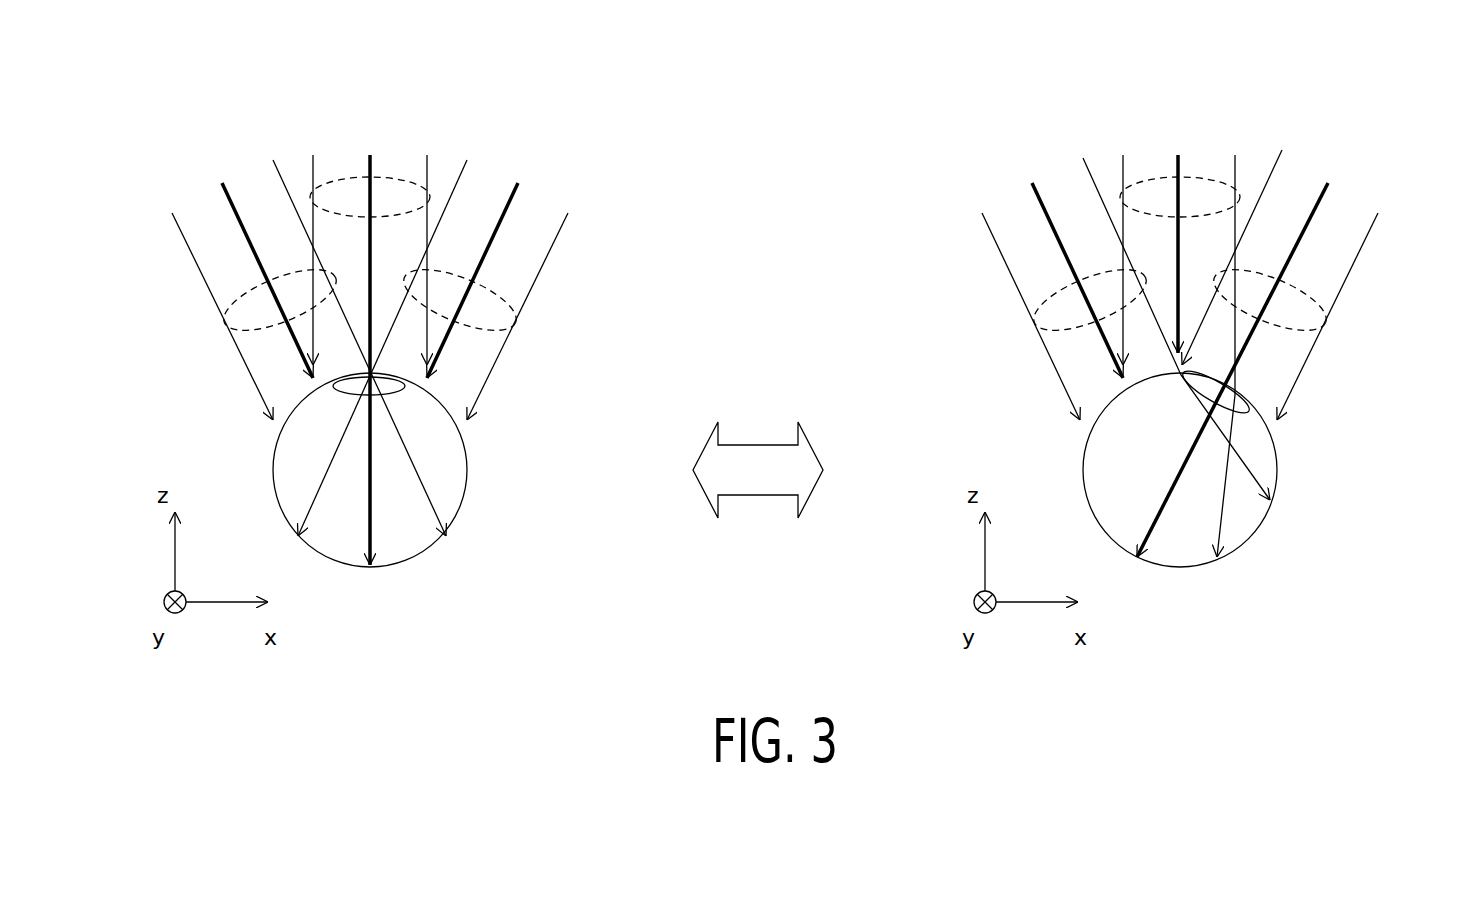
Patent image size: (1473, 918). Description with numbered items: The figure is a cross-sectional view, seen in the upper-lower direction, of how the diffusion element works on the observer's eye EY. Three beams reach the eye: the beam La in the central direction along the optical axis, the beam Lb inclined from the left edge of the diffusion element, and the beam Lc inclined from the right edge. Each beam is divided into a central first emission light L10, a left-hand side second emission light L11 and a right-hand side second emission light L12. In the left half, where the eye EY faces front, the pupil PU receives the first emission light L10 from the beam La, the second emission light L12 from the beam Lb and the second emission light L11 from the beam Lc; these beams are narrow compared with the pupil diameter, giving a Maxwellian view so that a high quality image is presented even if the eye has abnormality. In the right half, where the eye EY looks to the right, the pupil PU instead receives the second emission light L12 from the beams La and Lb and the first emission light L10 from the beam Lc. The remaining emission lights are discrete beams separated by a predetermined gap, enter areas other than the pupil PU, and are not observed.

The first emission light L10 is at (375, 173).
The left-hand side second emission light L11 is at (313, 175).
The right-hand side second emission light L12 is at (428, 175).
The beam La is at (350, 187).
The beam Lb is at (230, 330).
The beam Lc is at (513, 328).
The pupil PU is at (335, 393).
The eye EY is at (428, 550).